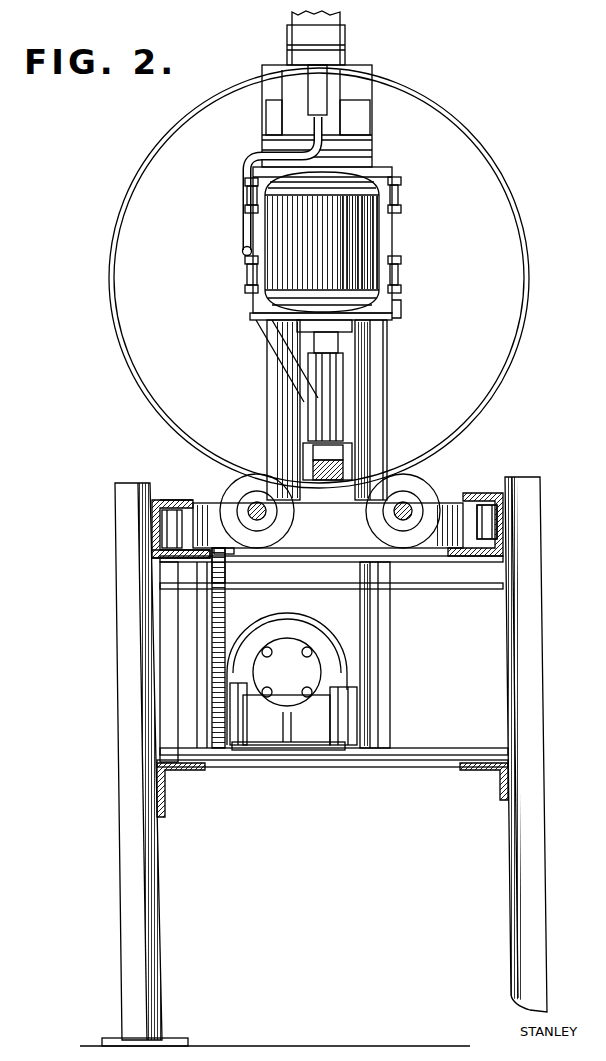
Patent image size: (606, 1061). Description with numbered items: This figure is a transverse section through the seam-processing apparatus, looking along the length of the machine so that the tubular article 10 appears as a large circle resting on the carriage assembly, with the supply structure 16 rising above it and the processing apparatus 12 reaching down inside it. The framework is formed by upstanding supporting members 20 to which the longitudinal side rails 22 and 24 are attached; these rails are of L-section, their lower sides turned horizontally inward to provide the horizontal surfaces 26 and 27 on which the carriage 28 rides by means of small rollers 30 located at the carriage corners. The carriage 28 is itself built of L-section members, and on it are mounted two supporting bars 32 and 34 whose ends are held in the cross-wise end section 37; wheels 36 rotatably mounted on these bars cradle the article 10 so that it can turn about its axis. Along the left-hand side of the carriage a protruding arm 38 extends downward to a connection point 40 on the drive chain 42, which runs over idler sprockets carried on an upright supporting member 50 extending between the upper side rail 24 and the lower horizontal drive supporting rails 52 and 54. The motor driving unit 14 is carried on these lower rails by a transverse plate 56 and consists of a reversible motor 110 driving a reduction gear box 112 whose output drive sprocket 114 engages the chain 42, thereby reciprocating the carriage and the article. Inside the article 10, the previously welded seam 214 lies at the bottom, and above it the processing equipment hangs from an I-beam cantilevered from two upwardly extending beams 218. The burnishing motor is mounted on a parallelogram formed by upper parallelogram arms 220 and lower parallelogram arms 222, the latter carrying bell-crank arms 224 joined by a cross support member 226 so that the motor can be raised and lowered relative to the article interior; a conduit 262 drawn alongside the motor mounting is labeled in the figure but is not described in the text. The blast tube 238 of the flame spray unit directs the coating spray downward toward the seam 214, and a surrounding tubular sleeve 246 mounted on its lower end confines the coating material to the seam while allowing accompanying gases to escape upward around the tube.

The tubular article 10 is at (503, 172).
The processing apparatus 12 is at (437, 222).
The motor driving unit 14 is at (398, 694).
The supply structure 16 is at (355, 46).
The upstanding supporting members 20 is at (160, 913).
The side rail 22 is at (503, 528).
The side rail 24 is at (162, 530).
The horizontal surface 26 is at (331, 572).
The horizontal surface 27 is at (153, 557).
The carriage 28 is at (168, 500).
The rollers 30 is at (160, 512).
The supporting bar 32 is at (410, 507).
The supporting bar 34 is at (252, 507).
The wheels 36 is at (232, 487).
The end section 37 is at (325, 550).
The protruding arm 38 is at (222, 548).
The connection point 40 is at (222, 580).
The drive chain 42 is at (210, 677).
The upright supporting member 50 is at (177, 662).
The drive supporting rail 52 is at (500, 783).
The drive supporting rail 54 is at (172, 793).
The transverse plate 56 is at (332, 762).
The motor 110 is at (305, 617).
The reduction gear box 112 is at (365, 645).
The output drive sprocket 114 is at (232, 712).
The seam 214 is at (388, 475).
The upwardly extending beams 218 is at (388, 350).
The upper parallelogram arms 220 is at (245, 197).
The lower parallelogram arms 222 is at (245, 262).
The bell-crank arms 224 is at (245, 290).
The cross support member 226 is at (398, 315).
The blast tube 238 is at (252, 320).
The tubular sleeve 246 is at (303, 450).
The conduit tube 262 is at (253, 170).